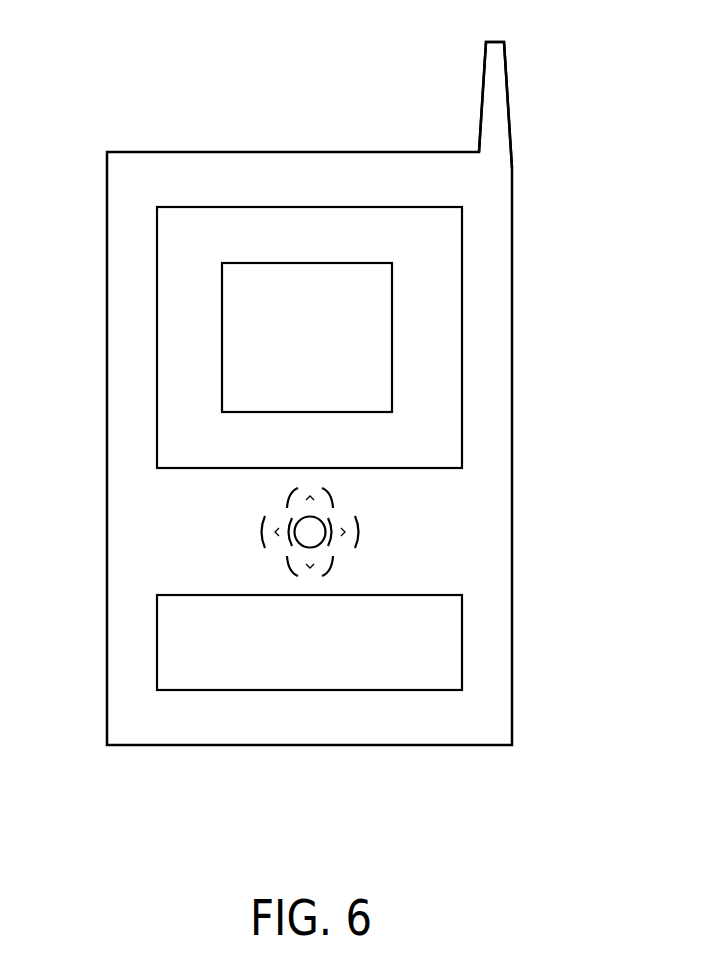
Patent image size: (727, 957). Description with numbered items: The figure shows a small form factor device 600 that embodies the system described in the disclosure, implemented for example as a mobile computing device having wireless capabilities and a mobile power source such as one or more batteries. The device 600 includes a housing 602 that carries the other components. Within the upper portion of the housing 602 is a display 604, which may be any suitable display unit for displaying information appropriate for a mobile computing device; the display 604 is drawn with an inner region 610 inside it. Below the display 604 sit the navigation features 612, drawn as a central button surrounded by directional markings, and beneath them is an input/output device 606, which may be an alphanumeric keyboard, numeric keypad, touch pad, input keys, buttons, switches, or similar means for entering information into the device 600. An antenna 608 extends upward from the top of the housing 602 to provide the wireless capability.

The small form factor device 600 is at (121, 59).
The housing 602 is at (512, 447).
The display 604 is at (462, 226).
The input/output (I/O) device 606 is at (462, 633).
The antenna 608 is at (481, 89).
The display window 610 is at (392, 356).
The navigation features 612 is at (376, 523).